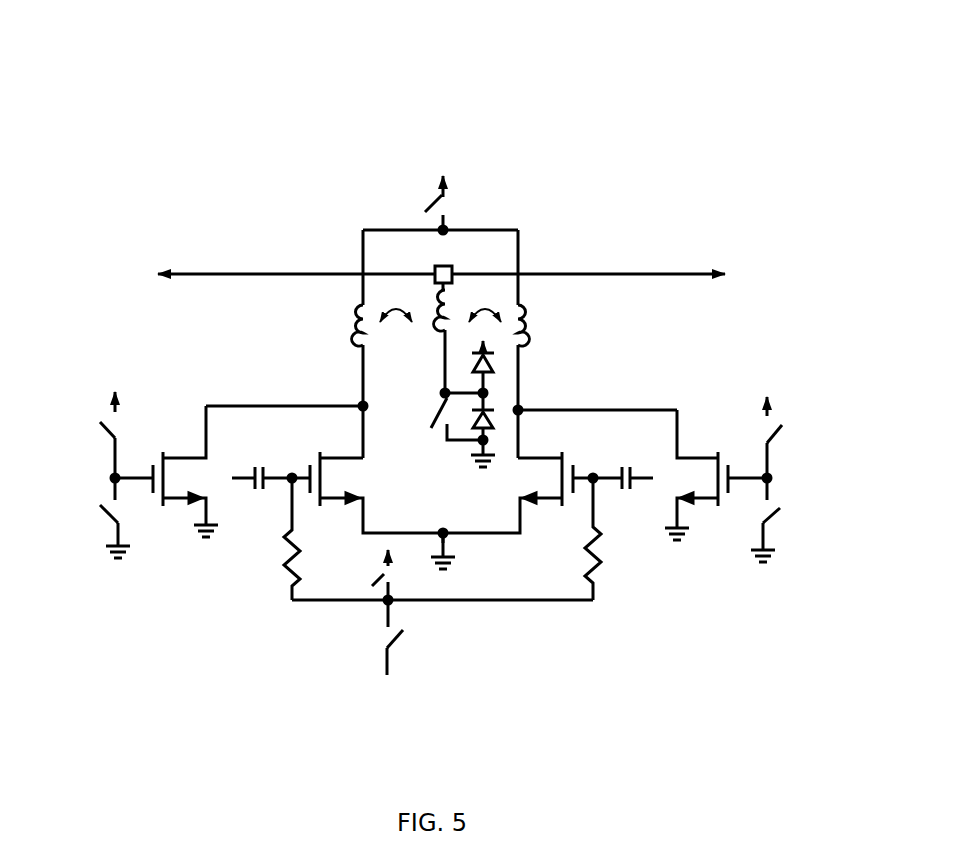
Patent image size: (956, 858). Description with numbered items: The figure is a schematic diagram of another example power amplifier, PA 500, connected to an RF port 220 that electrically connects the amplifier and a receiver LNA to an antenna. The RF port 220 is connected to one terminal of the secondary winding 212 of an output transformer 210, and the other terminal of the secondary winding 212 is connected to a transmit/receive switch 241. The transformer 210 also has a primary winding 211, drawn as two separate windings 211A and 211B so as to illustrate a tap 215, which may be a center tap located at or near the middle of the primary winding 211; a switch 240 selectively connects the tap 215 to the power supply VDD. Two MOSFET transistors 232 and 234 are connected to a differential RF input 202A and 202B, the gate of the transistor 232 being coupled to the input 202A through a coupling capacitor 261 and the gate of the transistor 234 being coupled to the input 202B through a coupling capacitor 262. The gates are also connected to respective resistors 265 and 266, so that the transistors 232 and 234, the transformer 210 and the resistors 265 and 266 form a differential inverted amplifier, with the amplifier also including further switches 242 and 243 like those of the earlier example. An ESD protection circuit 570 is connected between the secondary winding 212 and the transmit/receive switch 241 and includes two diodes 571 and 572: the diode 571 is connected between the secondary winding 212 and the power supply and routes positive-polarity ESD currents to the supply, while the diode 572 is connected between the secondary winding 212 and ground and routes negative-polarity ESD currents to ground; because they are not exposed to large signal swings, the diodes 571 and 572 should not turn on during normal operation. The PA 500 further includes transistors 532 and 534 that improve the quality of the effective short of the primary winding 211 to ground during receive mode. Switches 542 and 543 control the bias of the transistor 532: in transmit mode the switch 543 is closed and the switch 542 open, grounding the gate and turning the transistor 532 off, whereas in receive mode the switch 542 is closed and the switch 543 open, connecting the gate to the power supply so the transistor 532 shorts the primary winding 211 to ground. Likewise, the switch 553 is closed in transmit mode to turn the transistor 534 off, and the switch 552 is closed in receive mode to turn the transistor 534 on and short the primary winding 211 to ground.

The power amplifier 500 is at (138, 66).
The primary winding 211 is at (298, 218).
The primary winding portion 211A is at (336, 324).
The primary winding portion 211B is at (542, 304).
The output transformer 210 is at (474, 290).
The secondary winding 212 is at (432, 331).
The RF port 220 is at (409, 226).
The switch 240 is at (421, 178).
The tap 215 is at (469, 224).
The ESD protection circuit 570 is at (504, 389).
The diode 571 is at (506, 361).
The diode 572 is at (502, 404).
The transmit/receive switch 241 is at (411, 432).
The differential RF input 202A is at (233, 432).
The differential RF input 202B is at (652, 436).
The transistor 232 is at (289, 458).
The transistor 234 is at (579, 444).
The coupling capacitor 261 is at (256, 504).
The coupling capacitor 262 is at (628, 501).
The resistor 265 is at (268, 572).
The resistor 266 is at (616, 562).
The transistor 532 is at (162, 517).
The transistor 534 is at (715, 521).
The switch 542 is at (90, 414).
The switch 543 is at (93, 524).
The switch 552 is at (786, 401).
The switch 553 is at (782, 535).
The switch 243 is at (358, 584).
The switch 242 is at (378, 647).